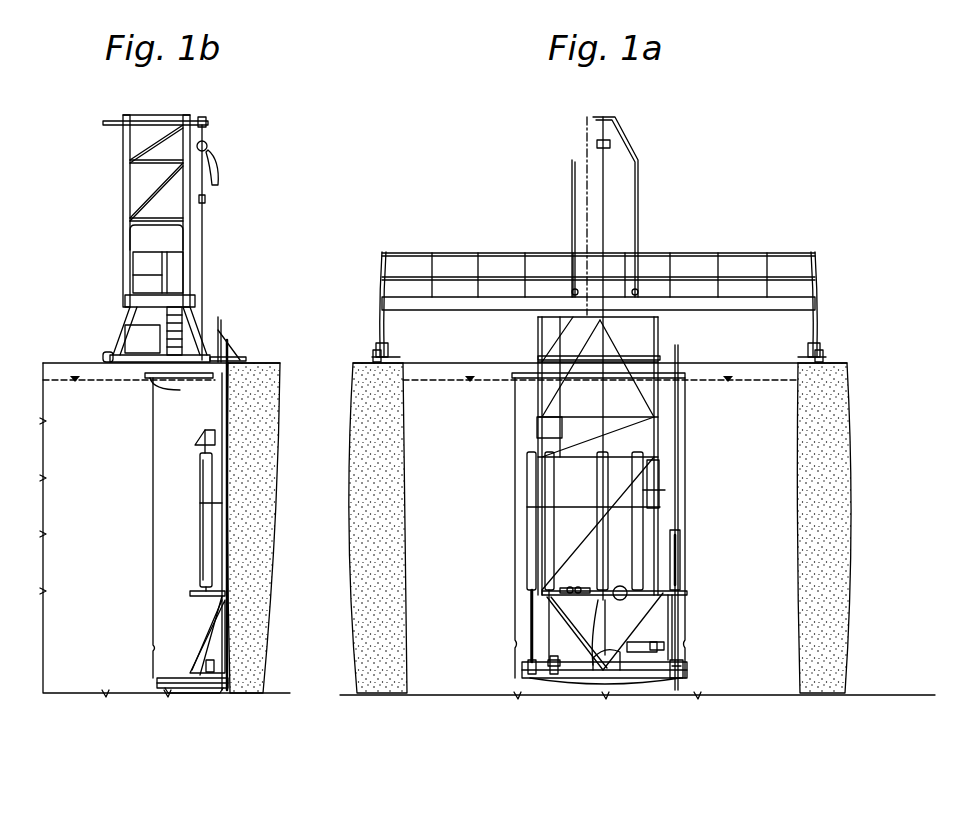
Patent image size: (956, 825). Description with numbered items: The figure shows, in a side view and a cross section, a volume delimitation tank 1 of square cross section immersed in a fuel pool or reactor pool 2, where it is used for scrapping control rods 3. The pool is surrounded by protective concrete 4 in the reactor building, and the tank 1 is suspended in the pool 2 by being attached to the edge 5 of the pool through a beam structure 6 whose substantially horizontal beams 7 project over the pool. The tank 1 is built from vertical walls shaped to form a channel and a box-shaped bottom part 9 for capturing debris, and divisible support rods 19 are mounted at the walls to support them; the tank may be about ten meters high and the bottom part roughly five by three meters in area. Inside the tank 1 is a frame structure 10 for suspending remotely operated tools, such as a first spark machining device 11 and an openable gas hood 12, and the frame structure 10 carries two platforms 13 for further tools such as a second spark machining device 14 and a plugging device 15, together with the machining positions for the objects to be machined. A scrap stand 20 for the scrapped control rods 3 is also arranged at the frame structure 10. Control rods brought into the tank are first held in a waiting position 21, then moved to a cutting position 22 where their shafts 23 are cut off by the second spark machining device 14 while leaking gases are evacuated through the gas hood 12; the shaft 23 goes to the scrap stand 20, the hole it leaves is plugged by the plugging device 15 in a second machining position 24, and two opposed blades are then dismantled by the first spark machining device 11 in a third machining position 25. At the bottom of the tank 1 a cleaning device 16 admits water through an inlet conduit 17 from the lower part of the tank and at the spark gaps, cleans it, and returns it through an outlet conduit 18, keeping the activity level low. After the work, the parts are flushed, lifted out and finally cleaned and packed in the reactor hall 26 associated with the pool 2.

In FIG. 1B, the volume delimitation tank 1 is at (162, 664).
In FIG. 1A, the volume delimitation tank 1 is at (522, 572).
In FIG. 1B, the fuel pool or reactor pool 2 is at (83, 682).
In FIG. 1A, the fuel pool or reactor pool 2 is at (782, 432).
In FIG. 1B, the control rods 3 is at (200, 543).
In FIG. 1A, the control rods 3 is at (548, 550).
In FIG. 1B, the protective concrete 4 is at (262, 462).
In FIG. 1A, the protective concrete 4 is at (370, 407).
In FIG. 1B, the edge of the pool 5 is at (263, 363).
In FIG. 1A, the edge of the pool 5 is at (835, 363).
In FIG. 1B, the beam structure 6 is at (235, 360).
In FIG. 1A, the beam structure 6 is at (648, 356).
In FIG. 1B, the horizontal beams 7 is at (140, 296).
In FIG. 1A, the horizontal beams 7 is at (800, 297).
In FIG. 1B, the bottom part 9 is at (196, 684).
In FIG. 1A, the bottom part 9 is at (522, 672).
In FIG. 1B, the frame structure 10 is at (229, 492).
In FIG. 1A, the frame structure 10 is at (538, 397).
In FIG. 1A, the first spark machining device 11 is at (662, 470).
In FIG. 1B, the gas hood 12 is at (200, 428).
In FIG. 1A, the gas hood 12 is at (545, 428).
In FIG. 1B, the platforms 13 is at (232, 675).
In FIG. 1A, the platforms 13 is at (685, 591).
In FIG. 1A, the second spark machining device 14 is at (563, 600).
In FIG. 1A, the plugging device 15 is at (672, 610).
In FIG. 1A, the cleaning device 16 is at (655, 652).
In FIG. 1A, the inlet conduit 17 is at (607, 667).
In FIG. 1A, the outlet conduit 18 is at (682, 416).
In FIG. 1B, the divisible support rods 19 is at (180, 383).
In FIG. 1A, the divisible support rods 19 is at (525, 373).
In FIG. 1A, the scrap stand 20 is at (676, 678).
In FIG. 1A, the waiting position 21 is at (532, 676).
In FIG. 1A, the cutting position 22 is at (553, 672).
In FIG. 1B, the shafts 23 is at (207, 625).
In FIG. 1A, the shafts 23 is at (547, 620).
In FIG. 1A, the second machining position 24 is at (600, 600).
In FIG. 1A, the third machining position 25 is at (683, 568).
In FIG. 1B, the reactor hall 26 is at (80, 253).
In FIG. 1A, the reactor hall 26 is at (823, 212).